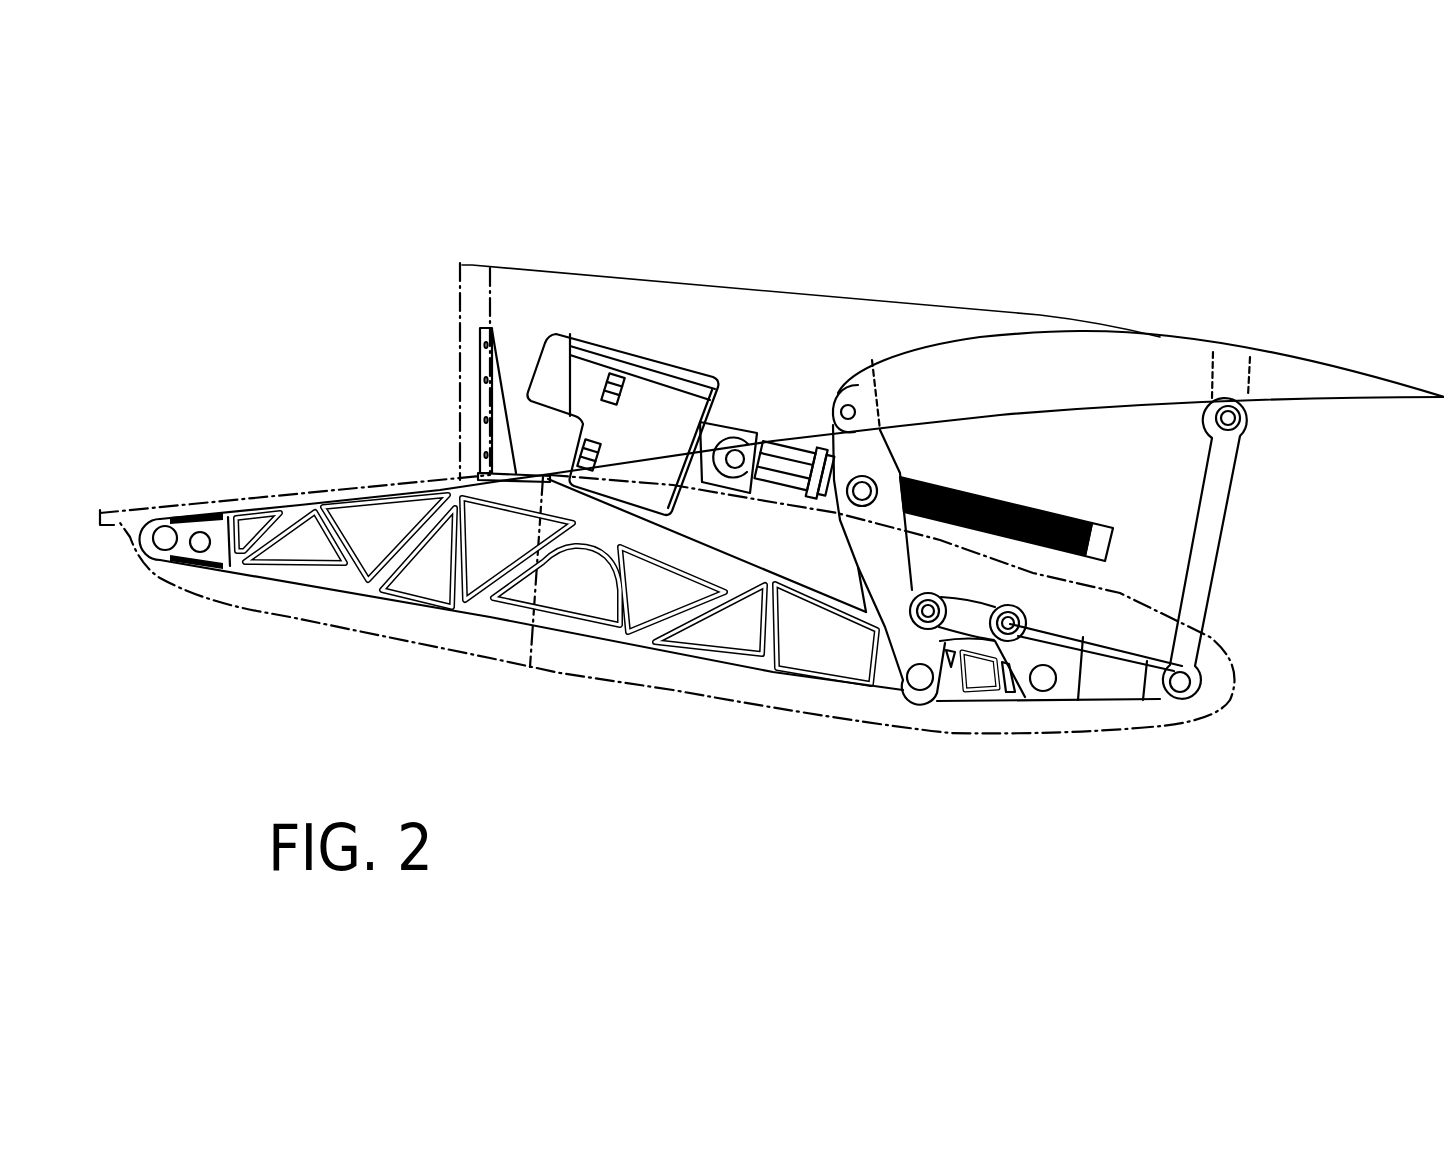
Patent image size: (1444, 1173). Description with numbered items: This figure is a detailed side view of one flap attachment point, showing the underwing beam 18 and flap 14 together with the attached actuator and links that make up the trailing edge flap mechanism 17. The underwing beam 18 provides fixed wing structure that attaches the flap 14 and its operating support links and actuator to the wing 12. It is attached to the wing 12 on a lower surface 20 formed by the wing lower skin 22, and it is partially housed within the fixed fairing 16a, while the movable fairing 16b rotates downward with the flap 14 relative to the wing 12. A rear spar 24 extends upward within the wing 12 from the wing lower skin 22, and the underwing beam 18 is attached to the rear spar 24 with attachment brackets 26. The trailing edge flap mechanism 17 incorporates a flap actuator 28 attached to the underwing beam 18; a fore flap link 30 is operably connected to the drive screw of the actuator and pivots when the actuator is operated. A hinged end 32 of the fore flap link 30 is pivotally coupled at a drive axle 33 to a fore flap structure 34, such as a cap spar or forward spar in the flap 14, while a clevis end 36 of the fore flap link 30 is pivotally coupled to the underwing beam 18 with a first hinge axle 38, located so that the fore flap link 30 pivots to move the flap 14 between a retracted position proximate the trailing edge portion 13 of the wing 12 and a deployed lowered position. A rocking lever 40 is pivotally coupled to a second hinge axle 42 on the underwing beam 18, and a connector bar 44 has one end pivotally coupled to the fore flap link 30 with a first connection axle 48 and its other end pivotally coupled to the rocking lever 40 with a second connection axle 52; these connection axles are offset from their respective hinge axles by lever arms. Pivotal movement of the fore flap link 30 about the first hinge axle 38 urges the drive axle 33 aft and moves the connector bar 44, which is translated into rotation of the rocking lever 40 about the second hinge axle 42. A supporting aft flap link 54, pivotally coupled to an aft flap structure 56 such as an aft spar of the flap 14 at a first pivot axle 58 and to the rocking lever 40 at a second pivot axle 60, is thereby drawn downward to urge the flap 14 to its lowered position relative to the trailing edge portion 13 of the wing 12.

The wing 12 is at (680, 225).
The trailing edge portion 13 is at (1085, 317).
The flap 14 is at (1090, 375).
The fixed fairing 16a is at (360, 633).
The movable fairing 16b is at (860, 723).
The trailing edge flap mechanism 17 is at (1300, 600).
The underwing beam 18 is at (577, 551).
The lower surface 20 is at (133, 523).
The wing lower skin 22 is at (213, 505).
The rear spar 24 is at (468, 337).
The attachment brackets 26 is at (512, 440).
The flap actuator 28 is at (655, 405).
The fore flap link 30 is at (873, 568).
The hinged end 32 is at (857, 442).
The drive axle 33 is at (848, 412).
The fore flap structure 34 is at (859, 387).
The clevis end 36 is at (903, 667).
The first hinge axle 38 is at (919, 680).
The rocking lever 40 is at (1100, 677).
The second hinge axle 42 is at (1043, 680).
The connector bar 44 is at (972, 620).
The first connection axle 48 is at (928, 611).
The second connection axle 52 is at (1010, 623).
The aft flap link 54 is at (1207, 533).
The aft flap structure 56 is at (1235, 375).
The first pivot axle 58 is at (1227, 417).
The second pivot axle 60 is at (1177, 680).